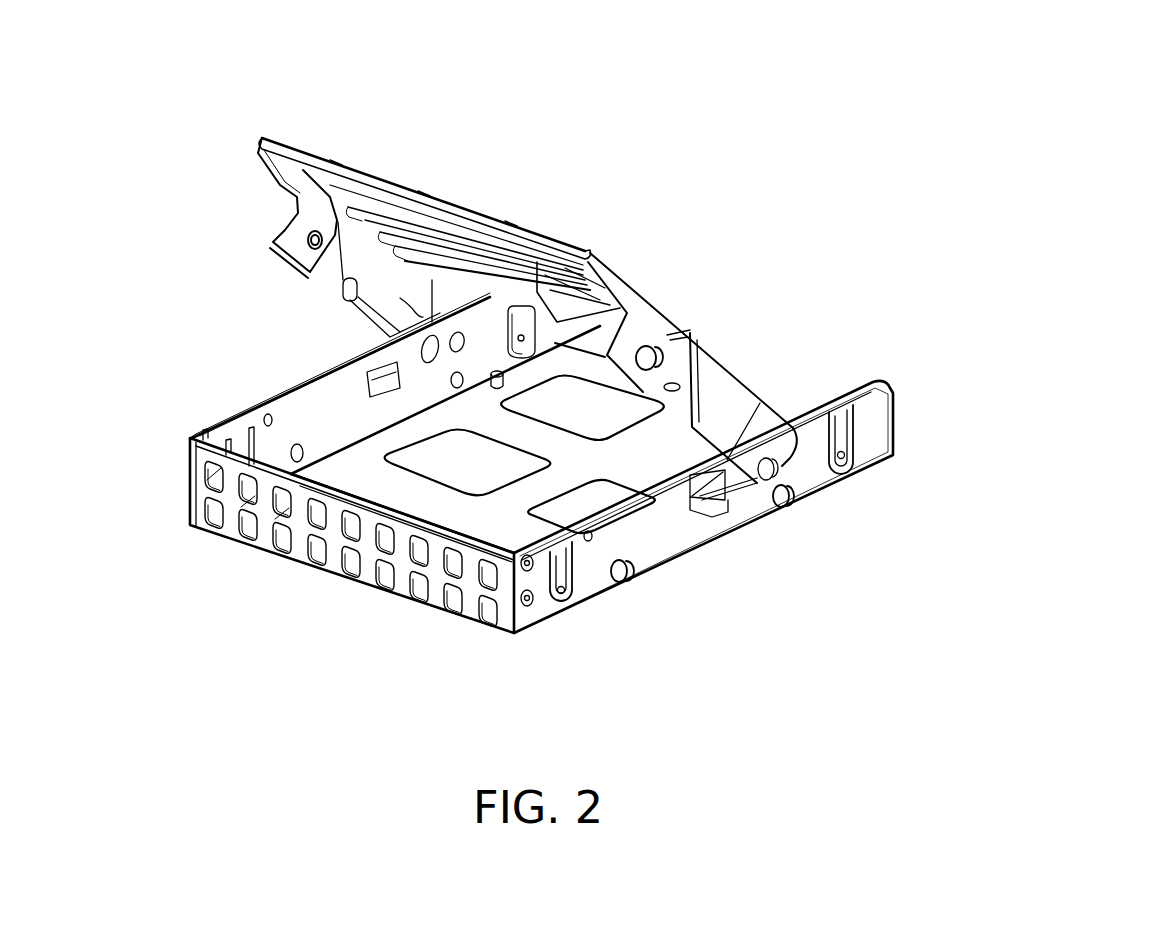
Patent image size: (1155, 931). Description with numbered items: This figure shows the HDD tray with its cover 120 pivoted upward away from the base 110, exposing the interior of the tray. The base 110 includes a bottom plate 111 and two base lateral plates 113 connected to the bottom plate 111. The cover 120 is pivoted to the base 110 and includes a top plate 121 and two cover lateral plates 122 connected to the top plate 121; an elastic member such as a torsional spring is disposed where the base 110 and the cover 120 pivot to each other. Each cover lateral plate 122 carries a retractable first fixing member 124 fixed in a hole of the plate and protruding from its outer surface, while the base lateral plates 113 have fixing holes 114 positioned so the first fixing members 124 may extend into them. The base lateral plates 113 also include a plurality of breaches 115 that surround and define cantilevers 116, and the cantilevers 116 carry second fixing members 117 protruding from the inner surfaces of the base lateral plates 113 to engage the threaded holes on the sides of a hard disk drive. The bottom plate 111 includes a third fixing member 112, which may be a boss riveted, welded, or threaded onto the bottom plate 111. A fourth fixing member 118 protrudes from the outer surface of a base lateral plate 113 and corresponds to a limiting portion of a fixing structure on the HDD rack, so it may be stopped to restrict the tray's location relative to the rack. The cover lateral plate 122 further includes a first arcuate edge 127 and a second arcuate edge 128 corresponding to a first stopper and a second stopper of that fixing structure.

The base 110 is at (944, 60).
The bottom plate 111 is at (463, 518).
The third fixing member 112 is at (495, 377).
The base lateral plates 113 is at (300, 398).
The fixing hole 114 is at (266, 420).
The breaches 115 is at (524, 590).
The cantilevers 116 is at (564, 568).
The second fixing members 117 is at (483, 294).
The fourth fixing member 118 is at (624, 578).
The cover 120 is at (1083, 78).
The top plate 121 is at (451, 205).
The cover lateral plates 122 is at (300, 218).
The first fixing member 124 is at (668, 338).
The first arcuate edge 127 is at (800, 433).
The second arcuate edge 128 is at (685, 382).